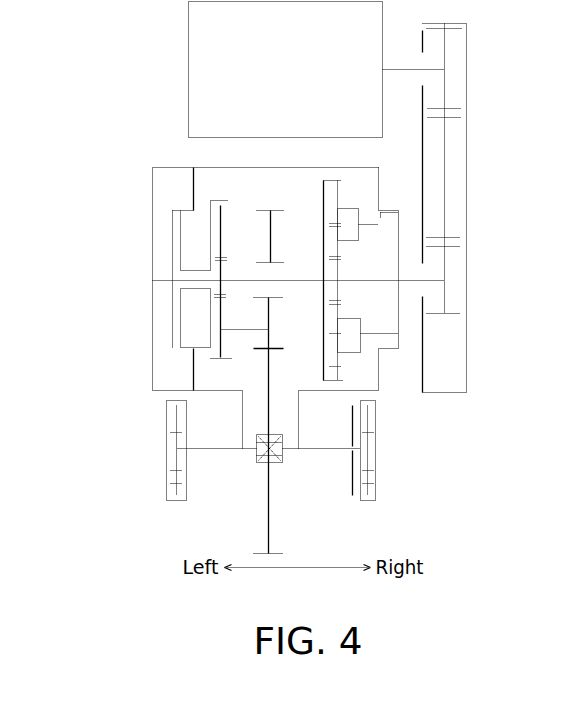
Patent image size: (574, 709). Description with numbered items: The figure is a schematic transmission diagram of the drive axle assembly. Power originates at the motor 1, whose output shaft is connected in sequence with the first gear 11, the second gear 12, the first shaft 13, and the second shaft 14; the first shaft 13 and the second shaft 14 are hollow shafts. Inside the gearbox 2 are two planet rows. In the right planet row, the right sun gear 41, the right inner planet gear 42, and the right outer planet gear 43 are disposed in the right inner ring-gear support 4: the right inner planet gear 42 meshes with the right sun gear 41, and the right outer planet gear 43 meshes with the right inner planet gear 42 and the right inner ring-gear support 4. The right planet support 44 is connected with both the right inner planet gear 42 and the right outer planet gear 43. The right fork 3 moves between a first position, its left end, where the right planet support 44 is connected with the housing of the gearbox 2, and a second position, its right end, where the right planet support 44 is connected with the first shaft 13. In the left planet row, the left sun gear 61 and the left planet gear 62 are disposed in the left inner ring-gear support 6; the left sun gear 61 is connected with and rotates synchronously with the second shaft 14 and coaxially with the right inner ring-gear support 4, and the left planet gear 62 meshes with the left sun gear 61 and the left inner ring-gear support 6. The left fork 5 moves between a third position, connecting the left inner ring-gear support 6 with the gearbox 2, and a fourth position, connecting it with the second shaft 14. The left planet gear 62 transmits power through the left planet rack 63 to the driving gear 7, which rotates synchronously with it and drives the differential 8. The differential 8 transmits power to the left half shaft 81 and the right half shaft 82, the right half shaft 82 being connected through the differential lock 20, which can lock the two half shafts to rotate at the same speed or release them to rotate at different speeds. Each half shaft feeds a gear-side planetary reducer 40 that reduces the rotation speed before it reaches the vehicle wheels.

The motor 1 is at (193, 73).
The first gear 11 is at (444, 91).
The second gear 12 is at (444, 202).
The first shaft 13 is at (444, 281).
The gearbox 2 is at (152, 179).
The right fork 3 is at (398, 210).
The right inner ring-gear support 4 is at (325, 180).
The right sun gear 41 is at (335, 261).
The right inner planet gear 42 is at (335, 226).
The right outer planet gear 43 is at (337, 204).
The right planet support 44 is at (378, 224).
The left fork 5 is at (185, 208).
The left inner ring-gear support 6 is at (228, 201).
The left sun gear 61 is at (215, 296).
The left planet gear 62 is at (193, 348).
The left planet rack 63 is at (270, 230).
The driving gear 7 is at (275, 209).
The second shaft 14 is at (163, 279).
The differential 8 is at (257, 440).
The left half shaft 81 is at (232, 450).
The right half shaft 82 is at (350, 447).
The differential lock 20 is at (283, 447).
The gear-side planetary reducer 40 is at (360, 498).